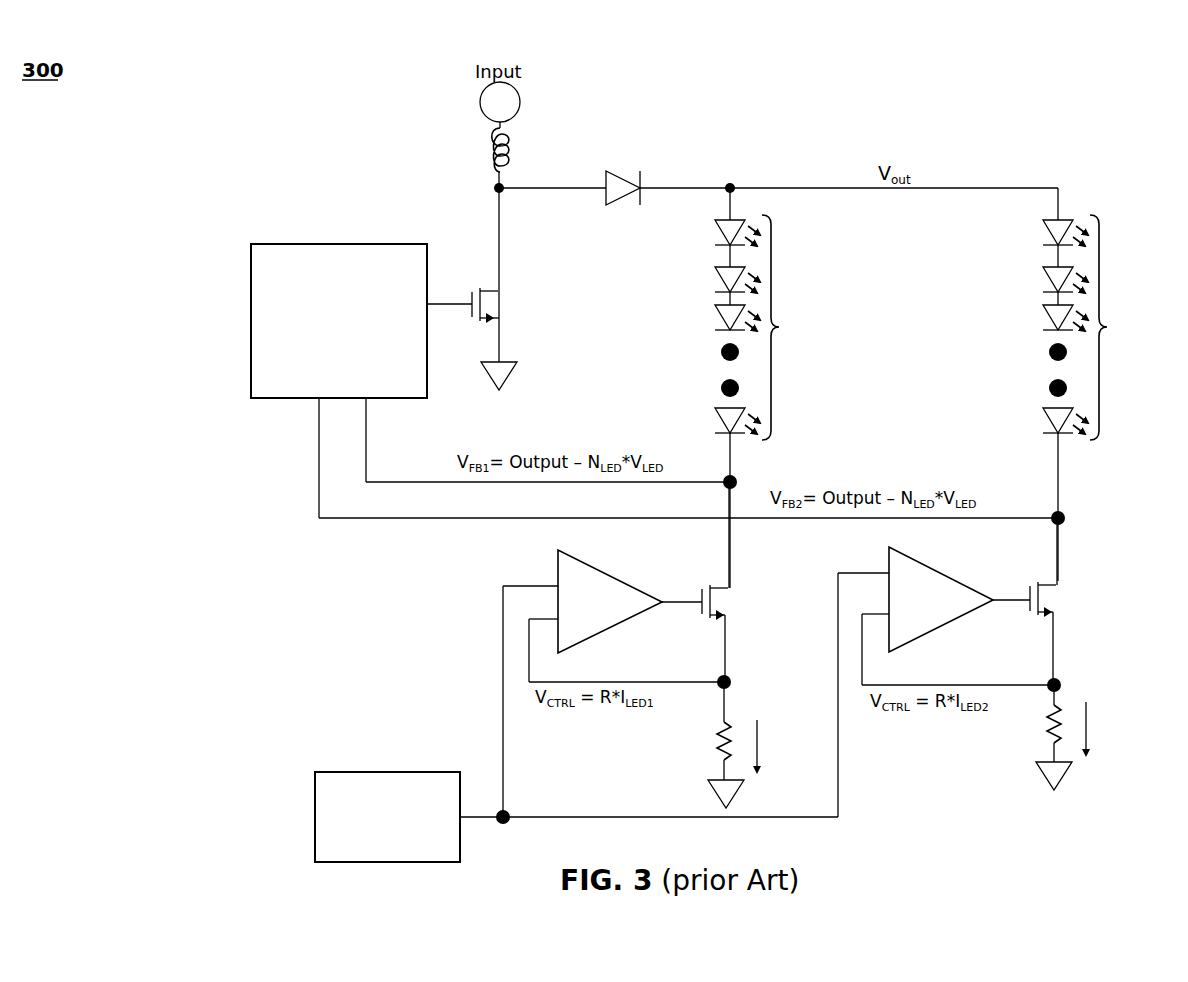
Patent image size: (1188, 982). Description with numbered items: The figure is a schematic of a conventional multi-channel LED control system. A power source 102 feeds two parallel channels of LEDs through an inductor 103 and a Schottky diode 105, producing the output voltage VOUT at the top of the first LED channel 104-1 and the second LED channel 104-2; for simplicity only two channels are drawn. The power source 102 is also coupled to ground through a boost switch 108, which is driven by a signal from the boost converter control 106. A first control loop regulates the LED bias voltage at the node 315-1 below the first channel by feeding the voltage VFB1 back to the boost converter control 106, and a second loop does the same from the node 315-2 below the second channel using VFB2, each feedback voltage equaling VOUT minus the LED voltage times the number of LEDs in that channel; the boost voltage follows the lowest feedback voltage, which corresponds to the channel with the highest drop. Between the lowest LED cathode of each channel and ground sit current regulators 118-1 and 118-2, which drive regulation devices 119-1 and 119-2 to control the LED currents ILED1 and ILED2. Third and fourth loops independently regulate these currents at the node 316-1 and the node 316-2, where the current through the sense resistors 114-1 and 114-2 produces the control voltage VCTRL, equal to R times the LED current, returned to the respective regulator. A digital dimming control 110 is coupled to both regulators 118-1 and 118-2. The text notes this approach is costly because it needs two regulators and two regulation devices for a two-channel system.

The power source 102 is at (518, 110).
The inductor 103 is at (509, 147).
The Schottky diode 105 is at (620, 180).
The boost converter control 106 is at (313, 244).
The boost switch 108 is at (500, 302).
The first LED channel 104-1 is at (779, 327).
The second LED channel 104-2 is at (1107, 327).
The node 315-1 is at (737, 478).
The node 315-2 is at (1062, 513).
The current regulator 118-1 is at (597, 577).
The current regulator 118-2 is at (927, 583).
The regulation device 119-1 is at (719, 596).
The regulation device 119-2 is at (1055, 591).
The node 316-1 is at (733, 678).
The node 316-2 is at (1062, 681).
The sense resistor R1 114-1 is at (718, 745).
The sense resistor R2 114-2 is at (1045, 728).
The digital dimming control 110 is at (365, 772).